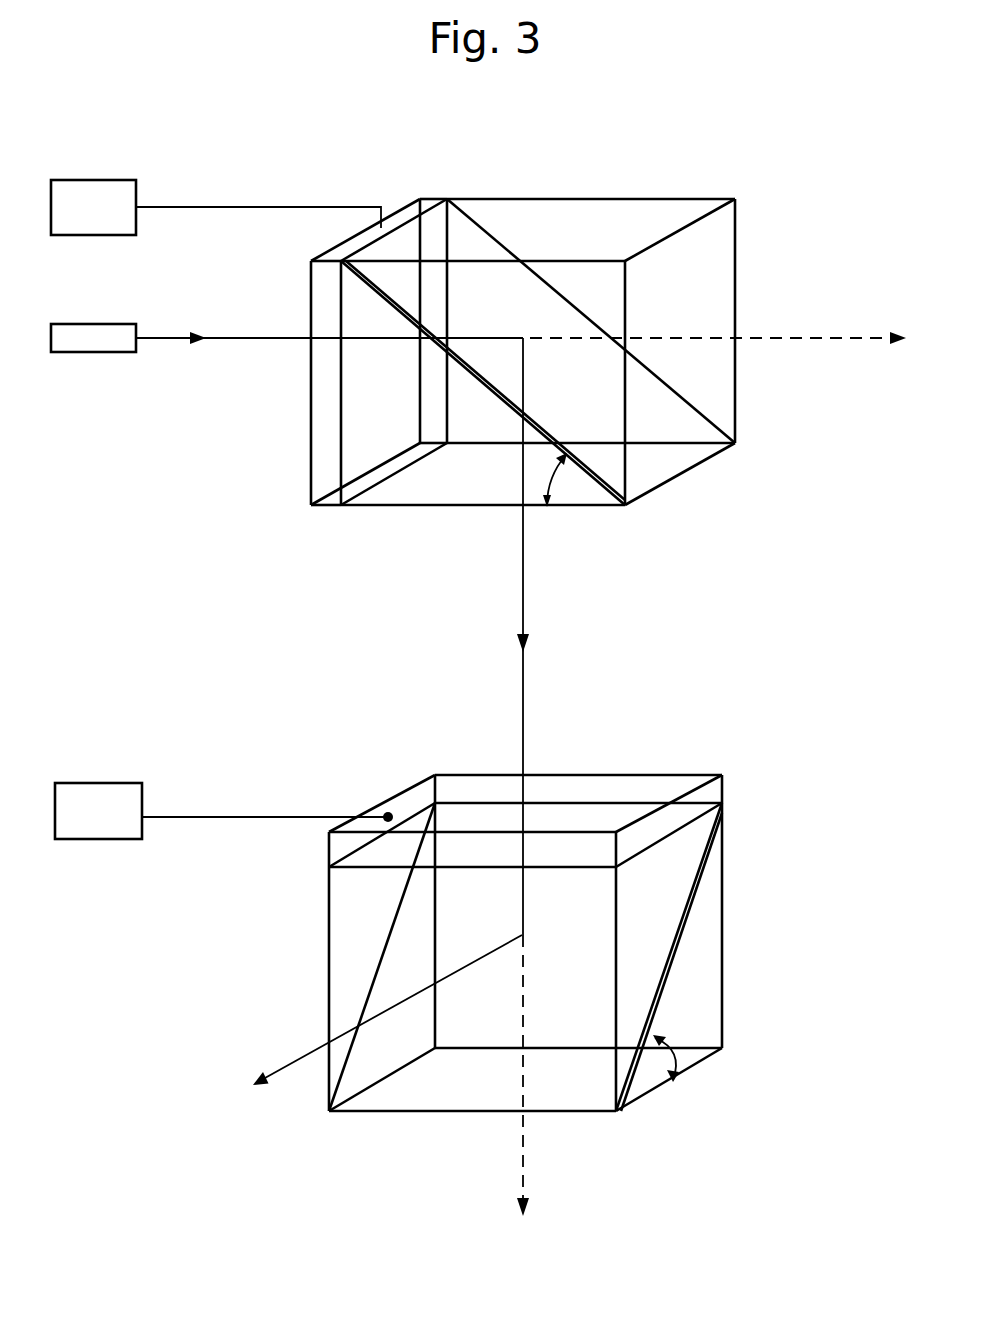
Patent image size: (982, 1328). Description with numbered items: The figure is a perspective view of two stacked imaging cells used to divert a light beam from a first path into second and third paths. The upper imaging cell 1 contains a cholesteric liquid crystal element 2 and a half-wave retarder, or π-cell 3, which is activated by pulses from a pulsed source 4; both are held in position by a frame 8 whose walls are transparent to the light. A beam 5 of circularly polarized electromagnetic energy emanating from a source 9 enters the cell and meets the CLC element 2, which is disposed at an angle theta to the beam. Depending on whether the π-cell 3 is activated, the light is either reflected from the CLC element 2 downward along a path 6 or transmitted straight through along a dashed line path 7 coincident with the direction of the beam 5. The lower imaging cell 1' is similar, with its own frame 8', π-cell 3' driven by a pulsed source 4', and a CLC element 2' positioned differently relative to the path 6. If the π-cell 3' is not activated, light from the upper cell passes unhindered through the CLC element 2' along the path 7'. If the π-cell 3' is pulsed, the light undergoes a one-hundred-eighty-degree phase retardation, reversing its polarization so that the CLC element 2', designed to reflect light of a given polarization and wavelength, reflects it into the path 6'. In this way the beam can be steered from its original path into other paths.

The imaging cell 1 is at (585, 304).
The cholesteric liquid crystal element 2 is at (538, 353).
The half-wave retarder (π-cell) 3 is at (348, 352).
The pulsed source 4 is at (216, 174).
The beam of circularly polarized electromagnetic energy 5 is at (167, 336).
The path 6 is at (563, 636).
The dashed line path 7 is at (718, 305).
The frame 8 is at (711, 352).
The source 9 is at (110, 352).
The imaging cell 1' is at (578, 901).
The cholesteric liquid crystal element 2' is at (553, 957).
The half-wave retarder (π-cell) 3' is at (564, 821).
The pulsed source 4' is at (224, 767).
The path 6' is at (387, 1010).
The path 7' is at (556, 1075).
The frame 8' is at (704, 957).